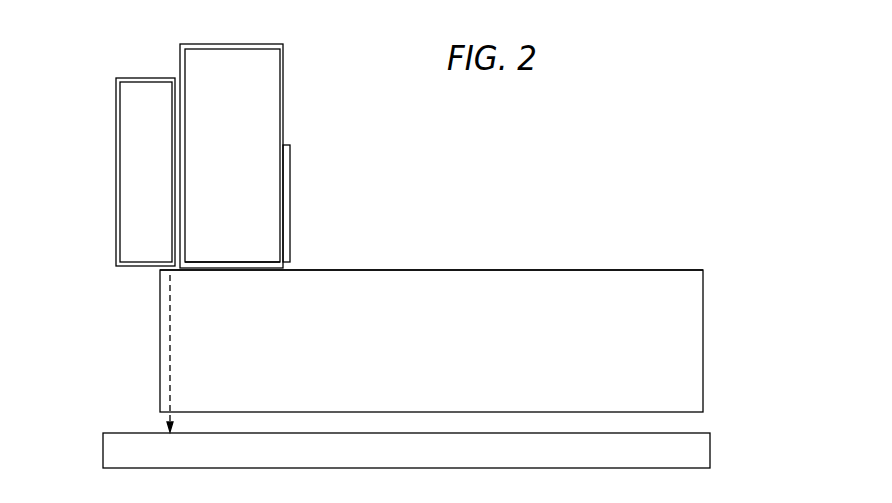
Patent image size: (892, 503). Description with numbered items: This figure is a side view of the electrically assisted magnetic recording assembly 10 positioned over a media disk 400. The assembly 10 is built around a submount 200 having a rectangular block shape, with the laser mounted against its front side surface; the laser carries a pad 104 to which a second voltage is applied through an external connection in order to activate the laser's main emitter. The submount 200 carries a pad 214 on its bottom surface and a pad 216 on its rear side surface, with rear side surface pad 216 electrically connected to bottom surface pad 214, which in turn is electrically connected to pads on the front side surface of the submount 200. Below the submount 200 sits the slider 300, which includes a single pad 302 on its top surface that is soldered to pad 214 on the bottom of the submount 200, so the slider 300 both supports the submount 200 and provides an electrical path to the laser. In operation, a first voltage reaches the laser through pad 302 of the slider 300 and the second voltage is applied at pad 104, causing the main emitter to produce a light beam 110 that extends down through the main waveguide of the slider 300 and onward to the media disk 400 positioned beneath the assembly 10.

The electrically assisted magnetic recording (EAMR) assembly 10 is at (620, 112).
The pad of the laser 104 is at (116, 172).
The light beam 110 is at (160, 340).
The submount 200 is at (283, 105).
The bottom surface pad 214 is at (300, 263).
The rear side surface pad 216 is at (290, 172).
The slider 300 is at (703, 330).
The pad of the slider 302 is at (318, 269).
The media disk 400 is at (710, 452).